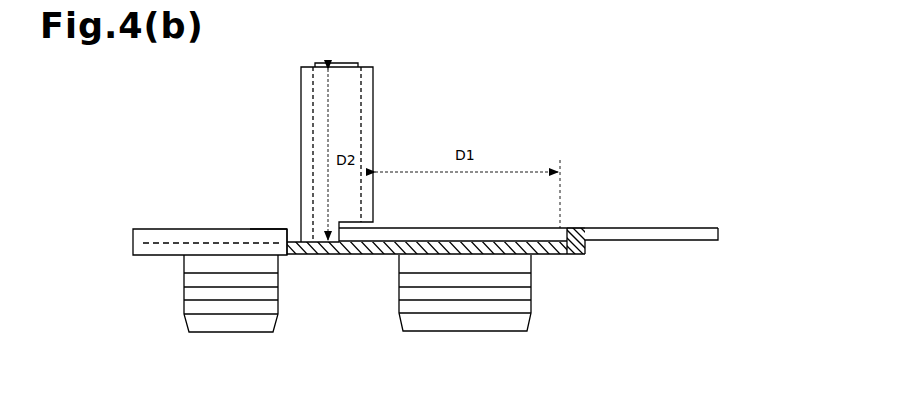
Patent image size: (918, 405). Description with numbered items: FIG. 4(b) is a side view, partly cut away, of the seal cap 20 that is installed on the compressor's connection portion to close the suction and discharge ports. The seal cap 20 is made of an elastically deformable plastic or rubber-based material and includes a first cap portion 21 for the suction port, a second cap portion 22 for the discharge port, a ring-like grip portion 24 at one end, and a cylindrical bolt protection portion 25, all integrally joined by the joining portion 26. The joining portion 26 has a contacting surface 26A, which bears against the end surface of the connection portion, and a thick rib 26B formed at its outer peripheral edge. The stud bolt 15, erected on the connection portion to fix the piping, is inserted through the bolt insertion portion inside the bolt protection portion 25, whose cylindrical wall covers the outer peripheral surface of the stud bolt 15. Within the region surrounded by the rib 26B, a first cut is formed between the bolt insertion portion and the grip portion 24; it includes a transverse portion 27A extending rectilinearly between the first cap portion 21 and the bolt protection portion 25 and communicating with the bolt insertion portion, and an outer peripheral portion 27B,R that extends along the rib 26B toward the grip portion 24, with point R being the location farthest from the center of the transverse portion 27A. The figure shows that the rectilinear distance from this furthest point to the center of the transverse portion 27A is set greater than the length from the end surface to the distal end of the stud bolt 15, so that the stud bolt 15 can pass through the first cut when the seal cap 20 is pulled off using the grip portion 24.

The stud bolt 15 is at (352, 60).
The seal cap 20 is at (547, 130).
The first cap portion 21 is at (475, 331).
The second cap portion 22 is at (278, 305).
The grip portion 24 is at (665, 227).
The bolt protection portion 25 is at (298, 128).
The joining portion 26 is at (420, 227).
The contacting surface 26A is at (160, 257).
The rib 26B is at (266, 228).
The transverse portion 27A is at (375, 257).
The outer peripheral portion and furthest point 27B,R is at (550, 256).